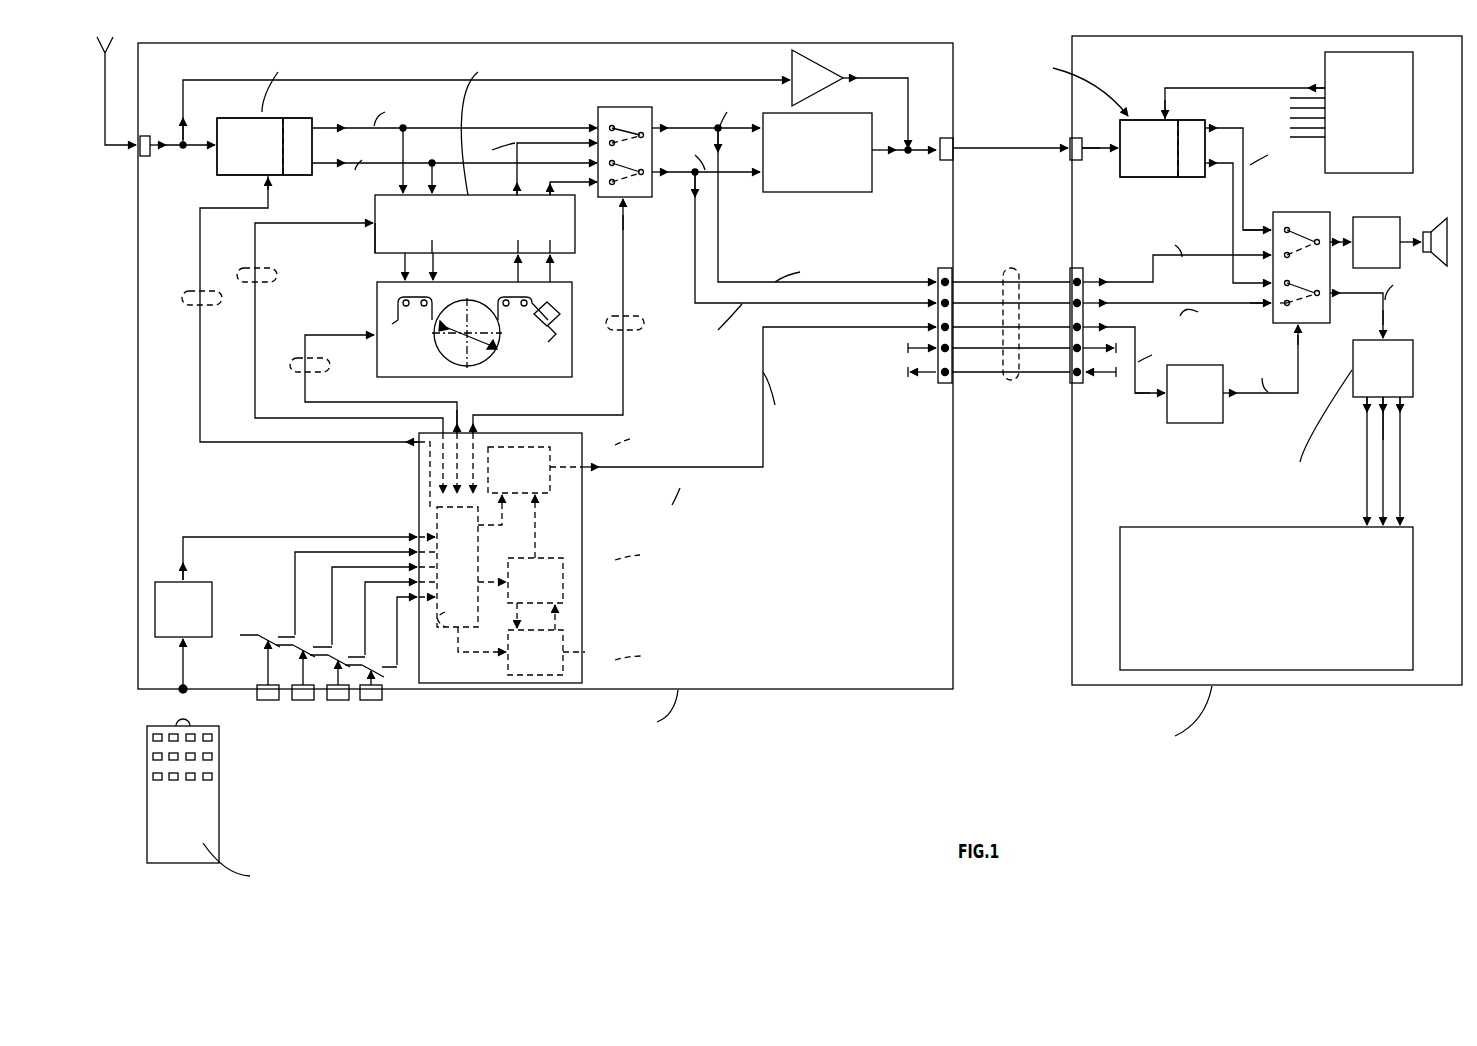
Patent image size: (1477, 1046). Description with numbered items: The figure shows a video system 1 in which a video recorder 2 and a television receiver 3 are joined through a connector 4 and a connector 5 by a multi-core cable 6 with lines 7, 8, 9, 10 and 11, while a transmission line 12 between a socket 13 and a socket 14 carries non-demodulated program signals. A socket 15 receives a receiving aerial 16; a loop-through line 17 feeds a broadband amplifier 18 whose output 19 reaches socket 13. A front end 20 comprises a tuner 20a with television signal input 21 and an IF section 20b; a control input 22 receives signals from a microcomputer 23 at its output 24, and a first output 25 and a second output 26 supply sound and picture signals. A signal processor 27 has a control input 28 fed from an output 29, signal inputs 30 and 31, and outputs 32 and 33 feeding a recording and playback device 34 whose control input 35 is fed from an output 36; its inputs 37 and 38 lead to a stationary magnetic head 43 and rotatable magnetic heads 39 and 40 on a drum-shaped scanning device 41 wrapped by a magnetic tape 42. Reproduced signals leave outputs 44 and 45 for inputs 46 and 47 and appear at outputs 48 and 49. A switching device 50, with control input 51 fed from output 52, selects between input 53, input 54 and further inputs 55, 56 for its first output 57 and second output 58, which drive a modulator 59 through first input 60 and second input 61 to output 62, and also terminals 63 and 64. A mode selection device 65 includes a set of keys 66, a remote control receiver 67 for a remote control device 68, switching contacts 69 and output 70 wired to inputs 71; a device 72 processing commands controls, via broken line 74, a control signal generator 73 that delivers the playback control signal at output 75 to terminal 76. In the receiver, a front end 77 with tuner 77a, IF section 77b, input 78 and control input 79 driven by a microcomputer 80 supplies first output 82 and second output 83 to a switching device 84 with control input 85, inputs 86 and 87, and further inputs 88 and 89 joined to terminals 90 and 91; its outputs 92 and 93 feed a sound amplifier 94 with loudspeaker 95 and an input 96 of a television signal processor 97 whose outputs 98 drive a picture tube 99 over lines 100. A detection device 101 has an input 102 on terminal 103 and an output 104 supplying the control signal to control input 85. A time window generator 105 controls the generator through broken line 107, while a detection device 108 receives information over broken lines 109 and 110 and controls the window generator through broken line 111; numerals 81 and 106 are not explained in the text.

The video system 1 is at (965, 720).
The video recorder 2 is at (835, 691).
The television receiver 3 is at (1295, 687).
The connector 4 is at (956, 386).
The connector 5 is at (1066, 386).
The multi-core cable 6 is at (1010, 386).
The line 7 is at (978, 280).
The line 8 is at (995, 301).
The line 9 is at (1033, 325).
The line 10 is at (978, 352).
The line 11 is at (1030, 360).
The transmission line 12 is at (1000, 147).
The socket 13 is at (950, 141).
The socket 14 is at (1068, 142).
The socket 15 is at (140, 150).
The receiving aerial 16 is at (107, 66).
The loop-through line 17 is at (192, 76).
The broadband amplifier 18 is at (790, 74).
The output 19 is at (850, 78).
The front end 20 is at (223, 178).
The tuner 20a is at (240, 118).
The IF section 20b is at (296, 118).
The television signal input 21 is at (217, 160).
The control input 22 is at (273, 177).
The microcomputer 23 is at (586, 512).
The output 24 is at (408, 446).
The first output 25 is at (325, 126).
The second output 26 is at (325, 168).
The signal processor 27 is at (375, 250).
The control input 28 is at (372, 226).
The output 29 is at (373, 445).
The signal input 30 is at (520, 146).
The signal input 31 is at (442, 195).
The output 32 is at (390, 239).
The output 33 is at (442, 243).
The recording and playback device 34 is at (374, 305).
The control input 35 is at (376, 340).
The output 36 is at (458, 415).
The input 37 is at (400, 268).
The input 38 is at (449, 266).
The rotatable magnetic head 39 is at (467, 333).
The rotatable magnetic head 40 is at (467, 339).
The drum-shaped scanning device 41 is at (428, 342).
The magnetic tape 42 is at (548, 339).
The stationary magnetic head 43 is at (523, 323).
The output 44 is at (512, 268).
The output 45 is at (553, 268).
The input 46 is at (503, 243).
The input 47 is at (550, 243).
The output 48 is at (514, 198).
The output 49 is at (548, 200).
The switching device 50 is at (620, 108).
The control input 51 is at (626, 206).
The output 52 is at (475, 416).
The input 53 is at (606, 126).
The input 54 is at (605, 164).
The further input 55 is at (604, 142).
The further input 56 is at (608, 184).
The first output 57 is at (656, 128).
The second output 58 is at (654, 176).
The modulator 59 is at (800, 188).
The first input 60 is at (742, 128).
The second input 61 is at (762, 174).
The output 62 is at (868, 152).
The terminal 63 is at (940, 266).
The terminal 64 is at (932, 300).
The mode selection device 65 is at (316, 522).
The set of keys 66 is at (312, 709).
The remote control receiver 67 is at (200, 640).
The remote control device 68 is at (232, 794).
The switching contacts 69 is at (270, 616).
The output 70 is at (180, 563).
The inputs 71 is at (434, 522).
The device for processing switching commands 72 is at (440, 637).
The control signal generator 73 is at (552, 448).
The broken line 74 is at (505, 506).
The output 75 is at (585, 470).
The terminal 76 is at (912, 346).
The front end 77 is at (1128, 117).
The tuner 77a is at (1136, 172).
The IF section 77b is at (1196, 172).
The input 78 is at (1118, 142).
The control input 79 is at (1164, 100).
The microcomputer 80 is at (1408, 110).
The microcomputer inputs 81 is at (1323, 86).
The first output 82 is at (1212, 128).
The second output 83 is at (1210, 168).
The switching device 84 is at (1310, 215).
The control input 85 is at (1300, 332).
The input 86 is at (1272, 229).
The input 87 is at (1270, 303).
The further input 88 is at (1271, 232).
The further input 89 is at (1272, 306).
The terminal 90 is at (1085, 281).
The terminal 91 is at (1120, 300).
The output 92 is at (1340, 240).
The output 93 is at (1334, 293).
The sound amplifier 94 is at (1370, 217).
The loudspeaker 95 is at (1435, 225).
The input 96 is at (1385, 341).
The television signal processor 97 is at (1412, 373).
The outputs 98 is at (1362, 401).
The picture tube 99 is at (1213, 527).
The lines 100 is at (1362, 452).
The detection device 101 is at (1173, 426).
The input 102 is at (1160, 396).
The terminal 103 is at (1112, 324).
The output 104 is at (1228, 400).
The time window generator 105 is at (565, 590).
The connection 106 is at (517, 610).
The broken line 107 is at (538, 536).
The detection device 108 is at (562, 670).
The broken line 109 is at (484, 656).
The broken line 110 is at (565, 640).
The broken line 111 is at (560, 622).